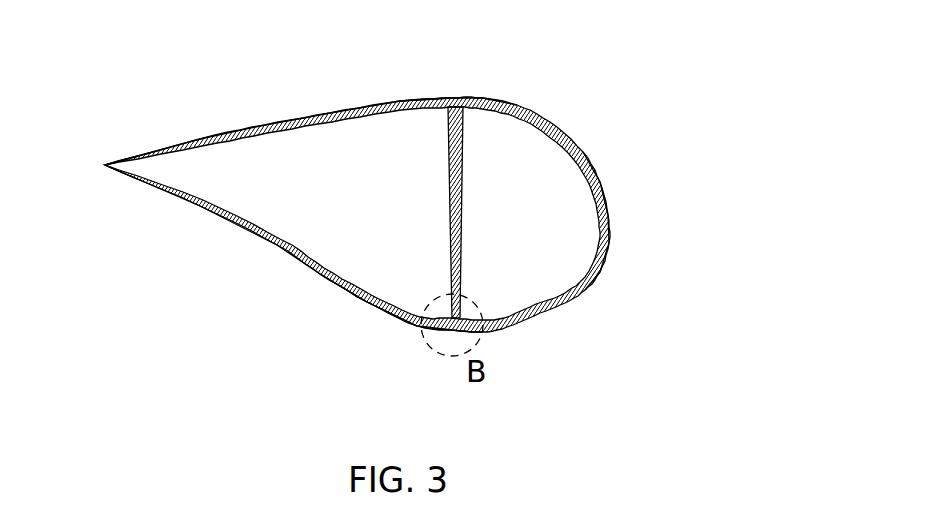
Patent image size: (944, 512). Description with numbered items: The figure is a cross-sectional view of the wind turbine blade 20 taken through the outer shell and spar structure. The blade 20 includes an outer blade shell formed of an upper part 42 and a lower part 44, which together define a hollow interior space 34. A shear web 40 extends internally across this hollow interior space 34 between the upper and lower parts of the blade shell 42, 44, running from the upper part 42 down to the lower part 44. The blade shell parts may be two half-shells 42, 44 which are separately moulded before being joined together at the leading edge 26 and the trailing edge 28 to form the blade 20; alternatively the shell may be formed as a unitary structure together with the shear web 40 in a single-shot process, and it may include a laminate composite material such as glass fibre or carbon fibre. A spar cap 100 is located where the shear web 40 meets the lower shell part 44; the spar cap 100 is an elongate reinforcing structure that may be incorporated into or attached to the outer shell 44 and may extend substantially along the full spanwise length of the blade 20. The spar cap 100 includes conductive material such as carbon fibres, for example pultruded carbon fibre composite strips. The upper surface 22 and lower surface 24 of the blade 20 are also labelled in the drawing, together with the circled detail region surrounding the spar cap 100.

The wind turbine blade 20 is at (527, 76).
The suction side wall 22 is at (330, 113).
The pressure side wall 24 is at (277, 245).
The leading edge 26 is at (609, 245).
The trailing edge 28 is at (105, 165).
The hollow interior space 34 is at (369, 214).
The shear web 40 is at (462, 243).
The upper part of blade shell 42 is at (437, 99).
The lower part of blade shell 44 is at (367, 302).
The spar cap 100 is at (482, 330).